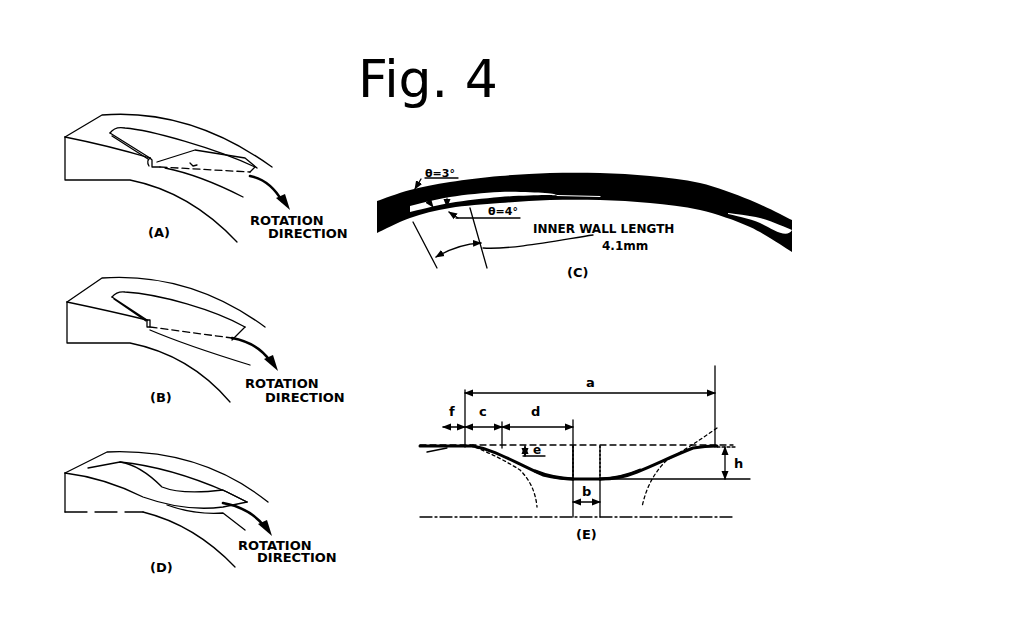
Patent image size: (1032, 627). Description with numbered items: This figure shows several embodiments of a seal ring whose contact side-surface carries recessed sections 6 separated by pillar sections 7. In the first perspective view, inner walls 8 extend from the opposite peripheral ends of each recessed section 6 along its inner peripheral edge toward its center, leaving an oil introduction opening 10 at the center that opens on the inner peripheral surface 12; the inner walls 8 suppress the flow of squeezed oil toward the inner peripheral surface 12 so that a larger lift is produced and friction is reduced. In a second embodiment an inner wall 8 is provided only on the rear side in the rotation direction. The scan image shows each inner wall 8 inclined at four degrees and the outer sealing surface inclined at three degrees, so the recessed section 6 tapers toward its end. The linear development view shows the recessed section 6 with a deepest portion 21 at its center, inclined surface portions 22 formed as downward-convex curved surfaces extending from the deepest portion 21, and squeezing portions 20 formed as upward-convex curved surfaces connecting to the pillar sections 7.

The recessed section 6 is at (164, 484).
The pillar section 7 is at (90, 461).
The inner wall 8 is at (139, 150).
The oil introduction opening 10 is at (163, 168).
The inner peripheral surface 12 is at (110, 168).
The squeezing portion 20 is at (490, 458).
The deepest portion 21 is at (587, 476).
The inclined surface portion 22 is at (555, 476).